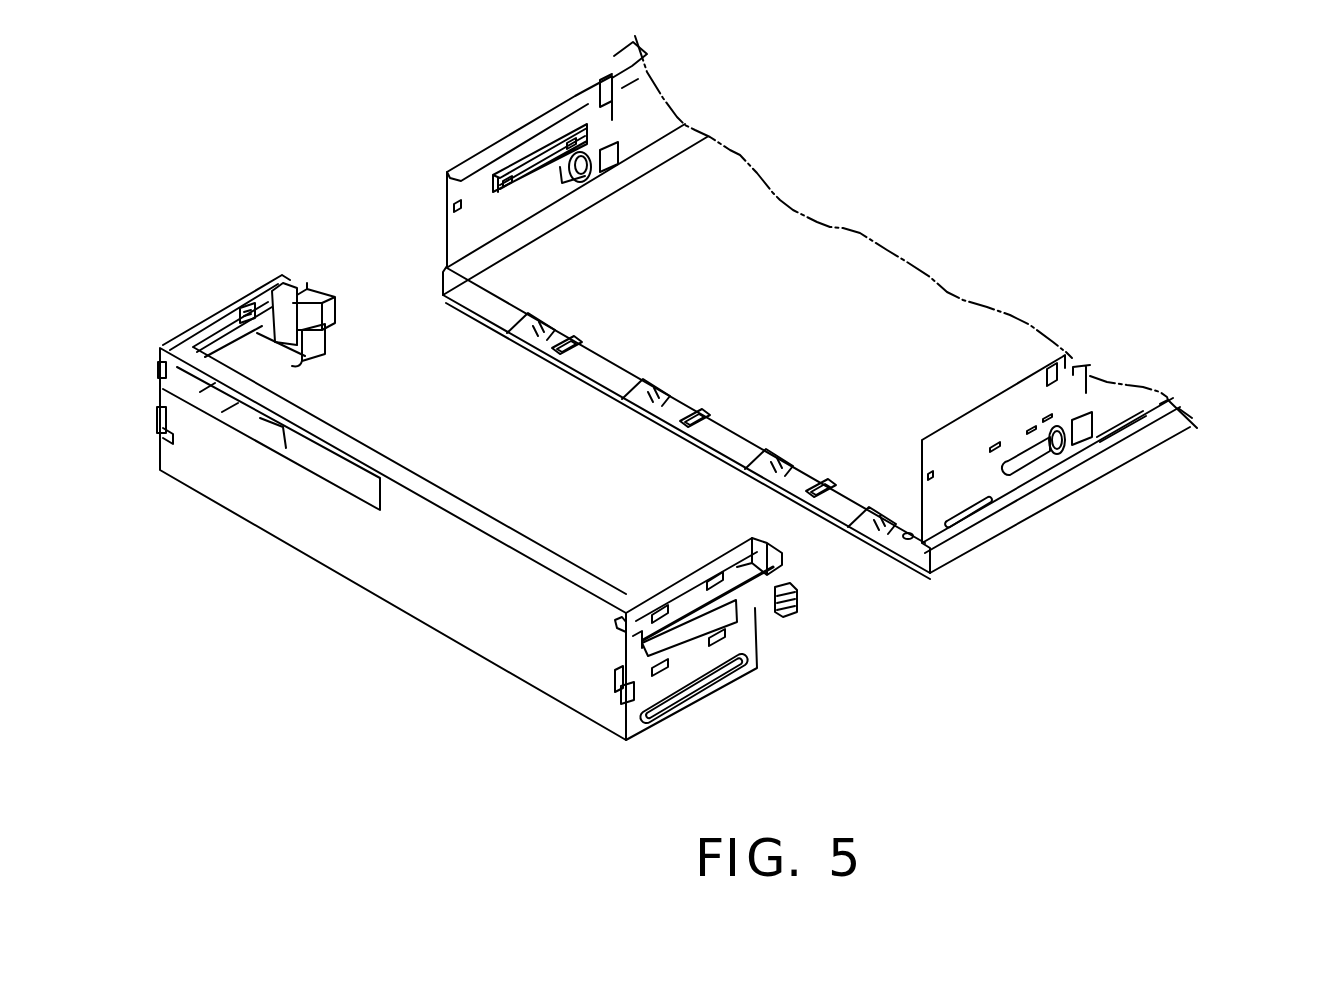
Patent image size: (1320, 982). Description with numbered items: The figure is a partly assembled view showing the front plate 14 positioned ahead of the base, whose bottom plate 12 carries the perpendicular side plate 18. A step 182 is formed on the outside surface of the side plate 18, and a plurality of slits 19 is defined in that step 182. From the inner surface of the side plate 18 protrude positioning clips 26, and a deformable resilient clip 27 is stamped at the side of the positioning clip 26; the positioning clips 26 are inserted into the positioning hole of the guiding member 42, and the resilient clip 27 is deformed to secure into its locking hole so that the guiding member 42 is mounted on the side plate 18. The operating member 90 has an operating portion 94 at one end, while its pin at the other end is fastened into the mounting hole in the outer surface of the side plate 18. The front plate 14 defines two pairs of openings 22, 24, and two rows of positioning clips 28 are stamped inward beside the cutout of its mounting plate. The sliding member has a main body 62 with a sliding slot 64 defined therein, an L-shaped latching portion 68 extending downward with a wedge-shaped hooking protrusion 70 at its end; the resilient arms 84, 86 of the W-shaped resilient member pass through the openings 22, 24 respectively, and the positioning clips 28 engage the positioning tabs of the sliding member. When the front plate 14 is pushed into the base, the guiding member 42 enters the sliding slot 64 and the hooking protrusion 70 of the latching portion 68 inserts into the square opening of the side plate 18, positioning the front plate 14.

The bottom plate 12 is at (853, 295).
The front plate 14 is at (353, 553).
The side plate 18 is at (943, 505).
The slits 19 is at (1125, 422).
The opening 22 is at (617, 624).
The opening 24 is at (615, 700).
The positioning clip 26 is at (547, 158).
The resilient clip 27 is at (590, 116).
The positioning clip 28 is at (250, 308).
The guiding member 42 is at (520, 163).
The main body 62 is at (322, 303).
The sliding slot 64 is at (780, 571).
The latching portion 68 is at (316, 341).
The hooking protrusion 70 is at (800, 603).
The resilient arm 84 is at (623, 636).
The resilient arm 86 is at (617, 688).
The operating member 90 is at (1018, 467).
The operating portion 94 is at (522, 195).
The step 182 is at (1160, 400).